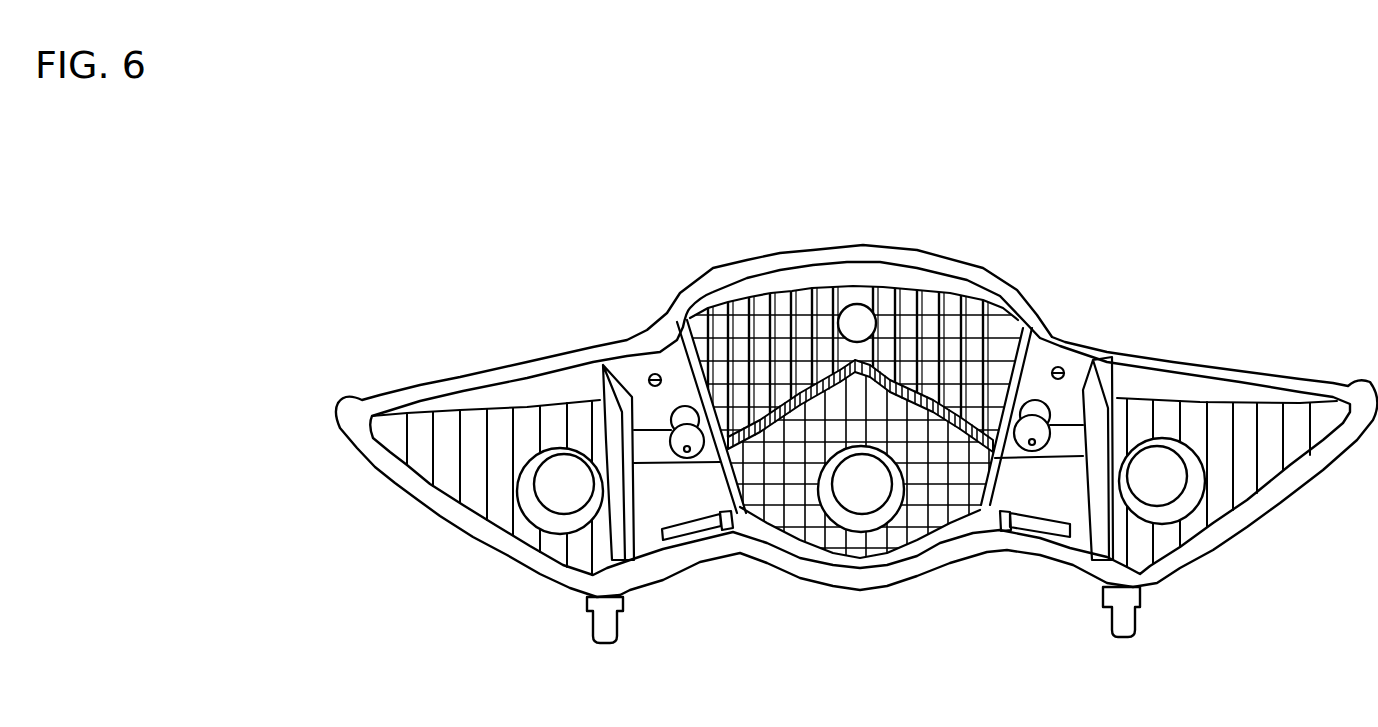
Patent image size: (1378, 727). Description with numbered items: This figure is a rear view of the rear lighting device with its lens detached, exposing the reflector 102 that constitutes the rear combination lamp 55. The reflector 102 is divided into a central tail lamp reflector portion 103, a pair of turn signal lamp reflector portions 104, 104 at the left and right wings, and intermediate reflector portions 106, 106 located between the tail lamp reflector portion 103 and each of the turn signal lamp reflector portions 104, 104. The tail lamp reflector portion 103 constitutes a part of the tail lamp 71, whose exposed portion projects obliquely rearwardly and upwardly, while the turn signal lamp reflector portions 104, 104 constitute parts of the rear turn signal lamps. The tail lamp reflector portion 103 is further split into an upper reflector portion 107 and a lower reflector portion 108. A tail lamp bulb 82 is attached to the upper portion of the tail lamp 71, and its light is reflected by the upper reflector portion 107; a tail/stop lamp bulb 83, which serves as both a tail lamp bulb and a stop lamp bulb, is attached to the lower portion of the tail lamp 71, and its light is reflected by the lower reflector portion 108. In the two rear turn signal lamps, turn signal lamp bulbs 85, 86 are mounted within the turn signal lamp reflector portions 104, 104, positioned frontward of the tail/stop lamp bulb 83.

The rear combination lamp 55 is at (597, 220).
The tail lamp 71 is at (777, 247).
The tail lamp bulb 82 is at (847, 318).
The tail/stop lamp bulb 83 is at (847, 493).
The turn signal lamp bulb 85 is at (550, 490).
The turn signal lamp bulb 86 is at (1170, 480).
The reflector 102 is at (697, 267).
The tail lamp reflector portion 103 is at (933, 267).
The turn signal lamp reflector portion 104 is at (477, 413).
The intermediate reflector portion 106 is at (667, 530).
The upper reflector portion 107 is at (970, 320).
The lower reflector portion 108 is at (913, 513).